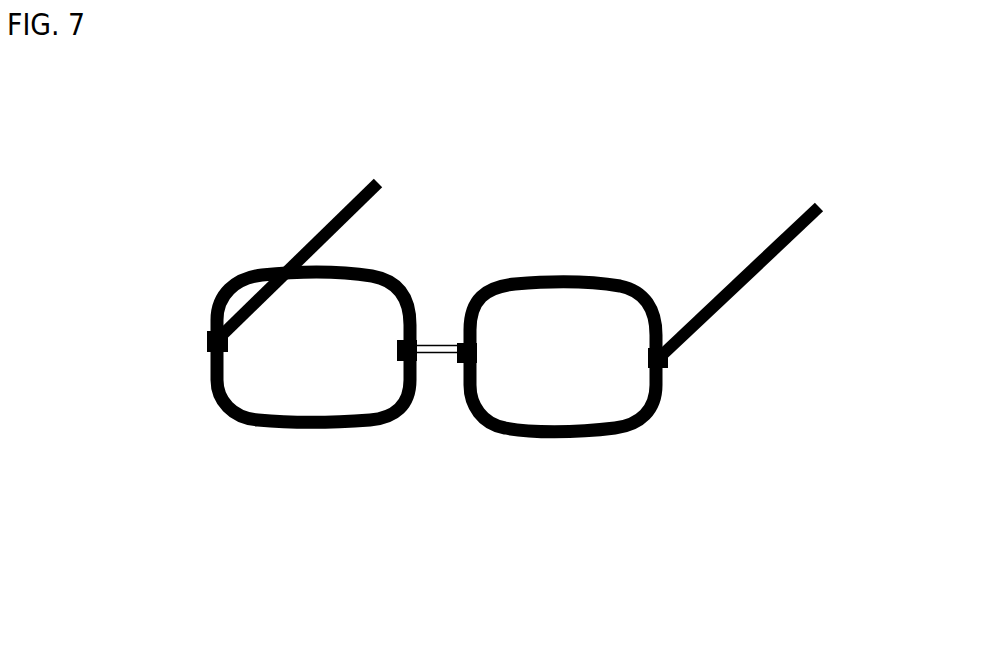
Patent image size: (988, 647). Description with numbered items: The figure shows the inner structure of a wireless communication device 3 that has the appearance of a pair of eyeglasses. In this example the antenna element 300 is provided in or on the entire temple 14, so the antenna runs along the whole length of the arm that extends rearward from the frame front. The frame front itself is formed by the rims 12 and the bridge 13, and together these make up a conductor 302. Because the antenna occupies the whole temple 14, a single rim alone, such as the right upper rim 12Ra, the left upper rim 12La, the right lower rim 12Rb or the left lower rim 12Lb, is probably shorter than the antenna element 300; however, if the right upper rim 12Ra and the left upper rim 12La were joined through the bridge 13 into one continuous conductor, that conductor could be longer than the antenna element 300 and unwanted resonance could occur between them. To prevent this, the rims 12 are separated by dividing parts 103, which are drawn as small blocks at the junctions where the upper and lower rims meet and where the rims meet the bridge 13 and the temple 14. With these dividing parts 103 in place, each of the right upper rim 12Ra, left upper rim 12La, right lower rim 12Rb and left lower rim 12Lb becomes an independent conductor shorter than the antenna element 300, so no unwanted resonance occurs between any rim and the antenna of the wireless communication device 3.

The wireless communication device 3 is at (589, 128).
The rims 12 is at (593, 535).
The right upper rim 12Ra is at (218, 311).
The right lower rim 12Rb is at (327, 427).
The left upper rim 12La is at (563, 282).
The left lower rim 12Lb is at (495, 428).
The bridge 13 is at (440, 353).
The temple 14 is at (694, 332).
The dividing parts 103 is at (229, 341).
The antenna element 300 is at (720, 535).
The conductor 302 is at (460, 580).